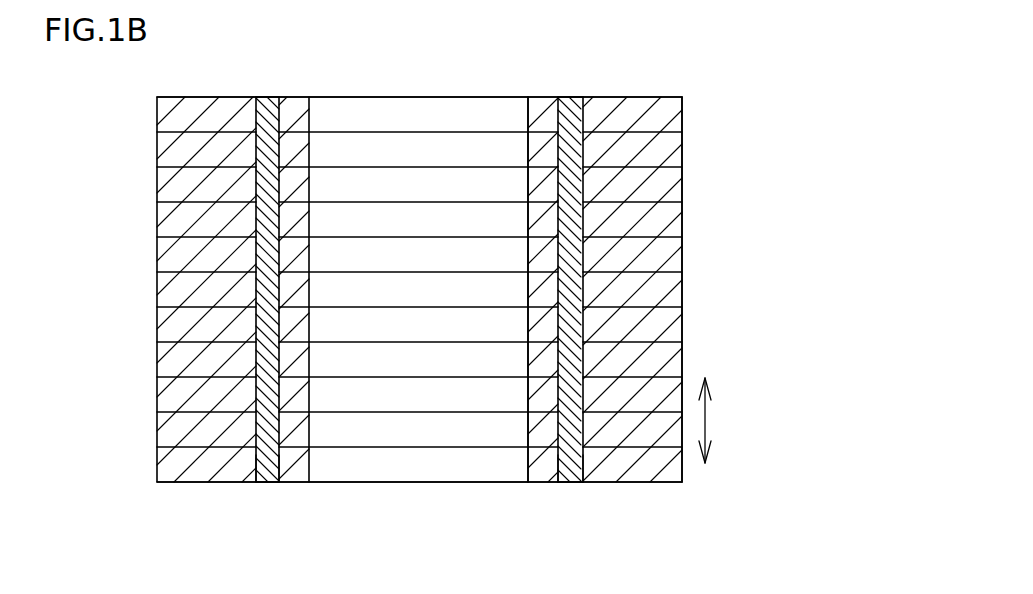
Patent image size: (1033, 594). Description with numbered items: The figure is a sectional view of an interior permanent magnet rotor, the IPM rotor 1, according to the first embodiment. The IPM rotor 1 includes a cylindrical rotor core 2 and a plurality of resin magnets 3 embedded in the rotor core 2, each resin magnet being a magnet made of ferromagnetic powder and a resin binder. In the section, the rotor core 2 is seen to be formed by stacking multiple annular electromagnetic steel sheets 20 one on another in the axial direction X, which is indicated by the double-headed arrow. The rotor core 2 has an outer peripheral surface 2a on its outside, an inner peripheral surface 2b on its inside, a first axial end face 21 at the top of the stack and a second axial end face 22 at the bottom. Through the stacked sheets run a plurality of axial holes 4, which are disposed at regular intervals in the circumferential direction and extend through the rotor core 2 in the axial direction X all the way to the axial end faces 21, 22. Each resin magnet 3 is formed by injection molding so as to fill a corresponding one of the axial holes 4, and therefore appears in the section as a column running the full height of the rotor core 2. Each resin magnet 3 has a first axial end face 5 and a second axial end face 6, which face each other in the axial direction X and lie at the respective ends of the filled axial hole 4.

The IPM rotor 1 is at (734, 109).
The rotor core 2 is at (684, 152).
The electromagnetic steel sheets 20 is at (682, 182).
The first axial end face 21 is at (642, 97).
The second axial end face 22 is at (642, 483).
The outer peripheral surface 2a is at (682, 262).
The inner peripheral surface 2b is at (528, 118).
The resin magnet 3 is at (265, 365).
The axial hole 4 is at (273, 467).
The first axial end face 5 is at (264, 97).
The second axial end face 6 is at (263, 482).
The axial direction X is at (708, 418).